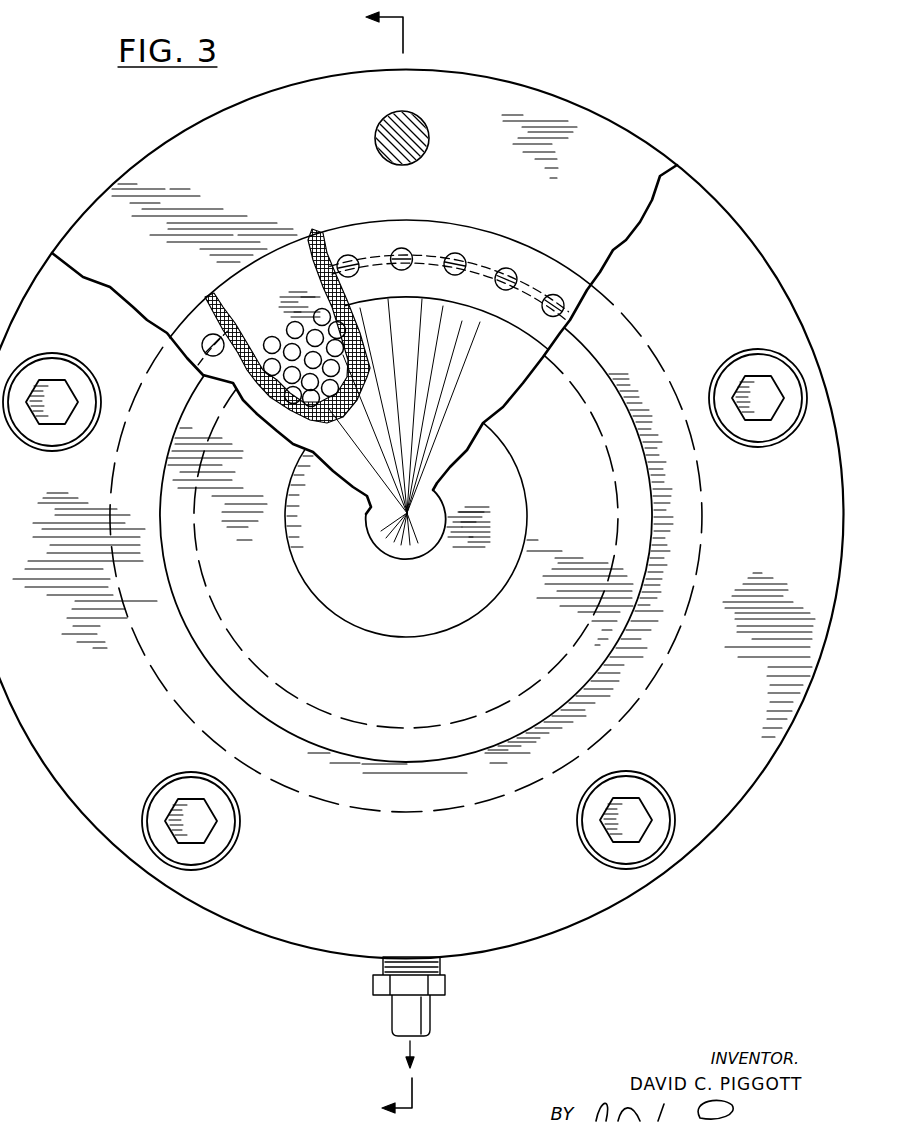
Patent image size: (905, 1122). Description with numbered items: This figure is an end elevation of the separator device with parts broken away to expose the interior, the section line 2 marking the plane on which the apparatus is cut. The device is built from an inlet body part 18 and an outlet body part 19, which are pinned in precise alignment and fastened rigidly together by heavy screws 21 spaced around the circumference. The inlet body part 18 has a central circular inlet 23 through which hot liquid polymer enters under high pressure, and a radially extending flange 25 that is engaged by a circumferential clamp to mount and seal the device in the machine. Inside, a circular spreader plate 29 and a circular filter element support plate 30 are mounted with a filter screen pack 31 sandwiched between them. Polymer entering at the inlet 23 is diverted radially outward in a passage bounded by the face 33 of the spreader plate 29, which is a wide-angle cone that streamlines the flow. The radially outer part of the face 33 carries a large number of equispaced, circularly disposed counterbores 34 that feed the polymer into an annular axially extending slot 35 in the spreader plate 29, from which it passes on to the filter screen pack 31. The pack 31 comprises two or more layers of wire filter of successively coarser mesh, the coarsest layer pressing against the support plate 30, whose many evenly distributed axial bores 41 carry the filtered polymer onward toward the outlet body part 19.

The section line 2- 2 is at (405, 562).
The inlet body part 18 is at (143, 703).
The outlet body part 19 is at (490, 107).
The heavy screws 21 is at (376, 134).
The central circular inlet 23 is at (312, 552).
The radially extending flange 25 is at (240, 665).
The circular spreader plate 29 is at (490, 373).
The circular filter element support plate 30 is at (277, 258).
The filter screen pack 31 is at (307, 240).
The face of the spreader plate 33 is at (506, 357).
The counterbores 34 is at (453, 253).
The annular axially extending slot 35 is at (377, 257).
The axial bores 41 is at (290, 321).